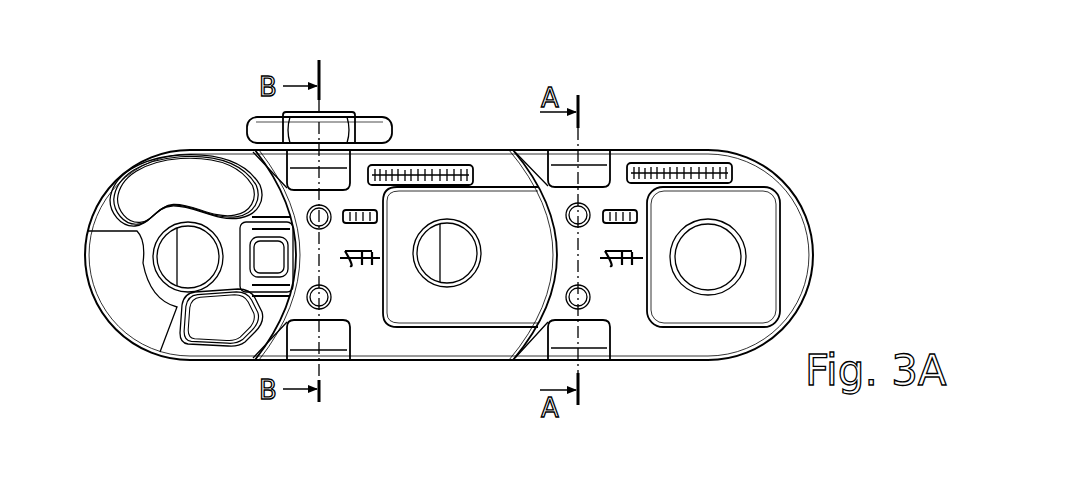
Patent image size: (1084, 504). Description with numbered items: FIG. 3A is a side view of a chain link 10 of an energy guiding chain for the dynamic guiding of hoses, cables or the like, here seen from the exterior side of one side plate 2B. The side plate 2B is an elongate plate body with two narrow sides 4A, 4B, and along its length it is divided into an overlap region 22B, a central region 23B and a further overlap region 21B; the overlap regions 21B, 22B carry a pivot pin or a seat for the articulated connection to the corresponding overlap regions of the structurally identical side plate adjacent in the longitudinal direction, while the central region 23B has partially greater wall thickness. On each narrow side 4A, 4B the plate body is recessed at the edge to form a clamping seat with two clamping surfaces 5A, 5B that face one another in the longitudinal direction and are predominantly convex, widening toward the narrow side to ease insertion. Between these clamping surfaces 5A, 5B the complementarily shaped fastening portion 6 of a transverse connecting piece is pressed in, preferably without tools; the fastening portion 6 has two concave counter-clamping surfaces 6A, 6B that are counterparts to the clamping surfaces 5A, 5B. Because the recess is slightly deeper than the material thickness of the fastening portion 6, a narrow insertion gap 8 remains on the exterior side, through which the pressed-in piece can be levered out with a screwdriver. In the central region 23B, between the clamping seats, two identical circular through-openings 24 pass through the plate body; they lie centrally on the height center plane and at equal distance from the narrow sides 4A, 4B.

The chain link 10 is at (135, 142).
The side plate 2B is at (103, 217).
The counter-clamping surface 6A is at (292, 127).
The counter-clamping surface 6B is at (343, 127).
The clamping surface 5A is at (297, 158).
The clamping surface 5B is at (337, 168).
The fastening portion 6 is at (328, 125).
The insertion gap 8 is at (607, 195).
The narrow side 4A is at (667, 150).
The narrow side 4B is at (665, 362).
The through-opening 24 is at (567, 219).
The overlap region 22B is at (387, 66).
The central region 23B is at (630, 66).
The overlap region 21B is at (823, 66).